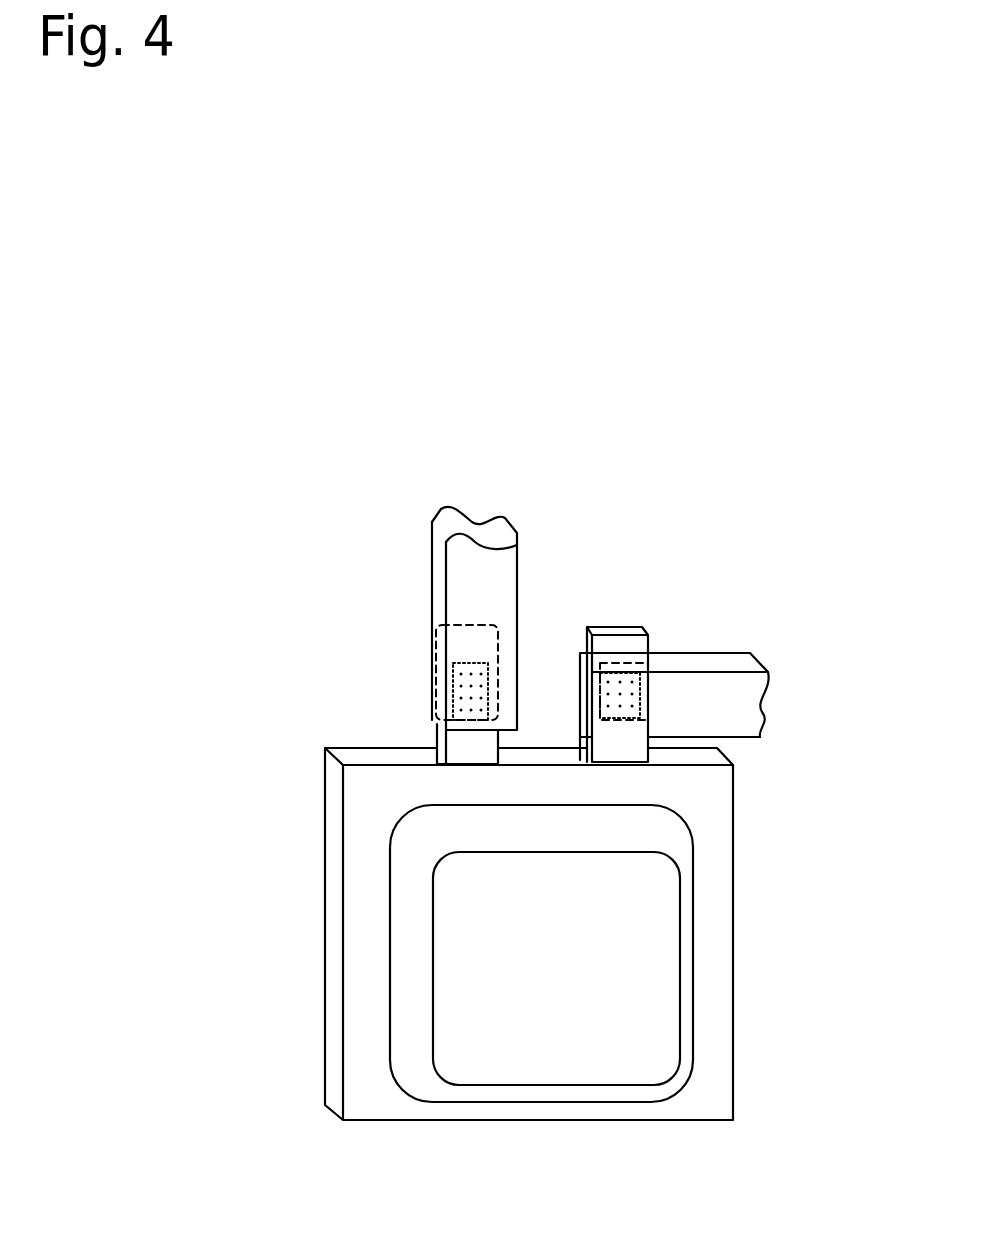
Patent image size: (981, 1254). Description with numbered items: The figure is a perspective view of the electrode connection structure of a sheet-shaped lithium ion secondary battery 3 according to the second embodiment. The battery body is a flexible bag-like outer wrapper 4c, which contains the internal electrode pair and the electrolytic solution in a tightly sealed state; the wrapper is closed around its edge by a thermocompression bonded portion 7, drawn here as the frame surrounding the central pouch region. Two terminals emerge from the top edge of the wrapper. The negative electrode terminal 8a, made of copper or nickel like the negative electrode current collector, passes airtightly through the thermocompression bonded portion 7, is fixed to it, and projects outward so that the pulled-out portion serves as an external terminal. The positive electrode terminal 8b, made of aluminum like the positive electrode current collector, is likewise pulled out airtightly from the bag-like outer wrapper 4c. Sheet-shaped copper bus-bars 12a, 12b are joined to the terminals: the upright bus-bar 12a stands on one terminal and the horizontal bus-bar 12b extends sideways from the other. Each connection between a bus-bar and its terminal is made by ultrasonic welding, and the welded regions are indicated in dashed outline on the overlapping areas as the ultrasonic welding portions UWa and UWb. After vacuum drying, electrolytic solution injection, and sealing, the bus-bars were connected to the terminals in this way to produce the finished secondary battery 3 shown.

The sheet-shaped lithium ion secondary battery 3 is at (621, 934).
The thermocompression bonded portion 7 is at (710, 1007).
The bag-like outer wrapper 4c is at (660, 1053).
The negative electrode terminal 8a is at (463, 742).
The positive electrode terminal 8b is at (628, 757).
The bus-bar 12a is at (430, 568).
The bus-bar 12b is at (722, 666).
The ultrasonic welding portion UWa is at (472, 687).
The ultrasonic welding portion UWb is at (625, 683).